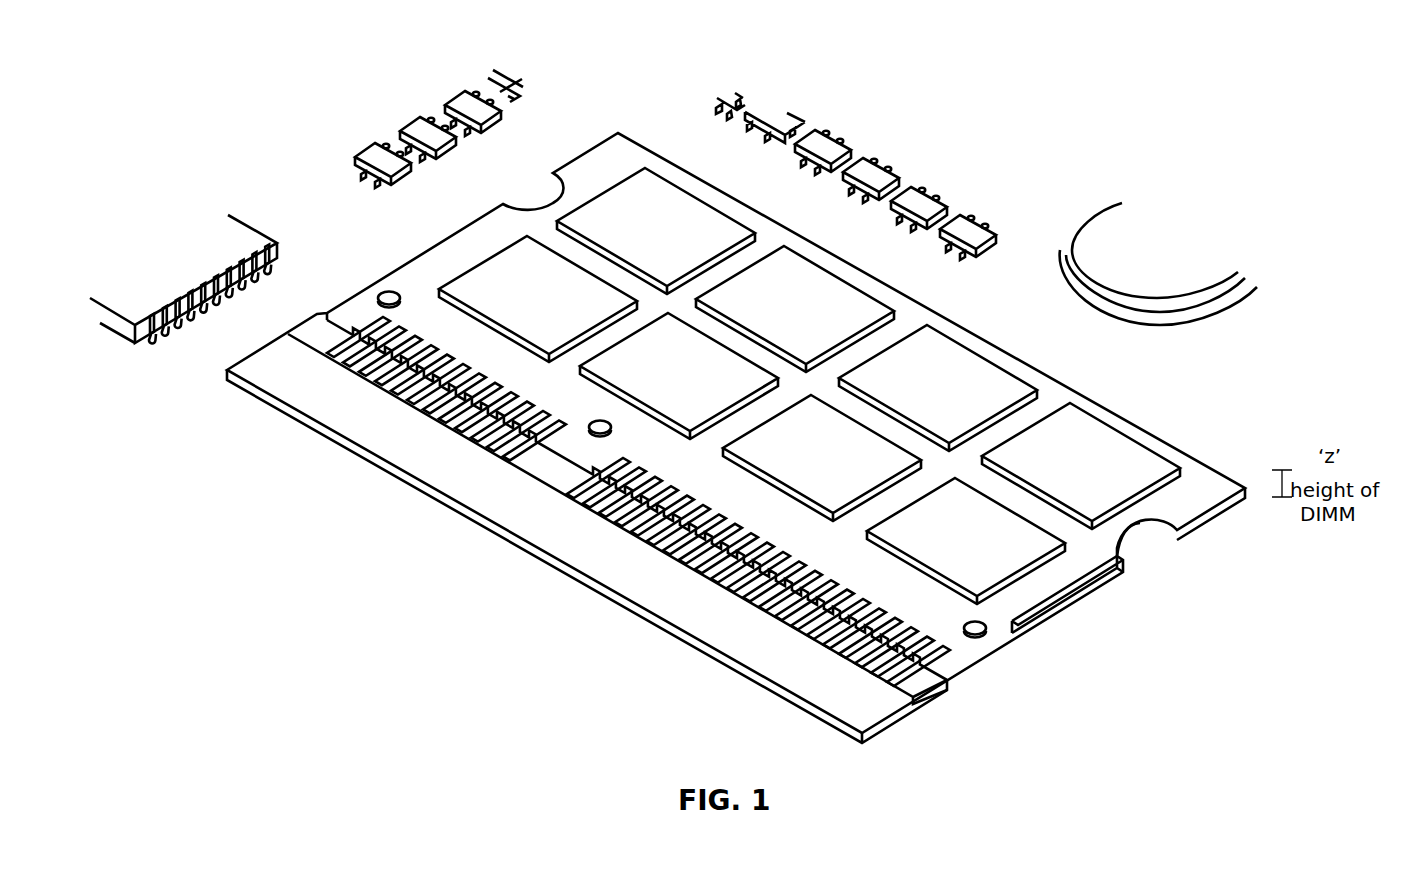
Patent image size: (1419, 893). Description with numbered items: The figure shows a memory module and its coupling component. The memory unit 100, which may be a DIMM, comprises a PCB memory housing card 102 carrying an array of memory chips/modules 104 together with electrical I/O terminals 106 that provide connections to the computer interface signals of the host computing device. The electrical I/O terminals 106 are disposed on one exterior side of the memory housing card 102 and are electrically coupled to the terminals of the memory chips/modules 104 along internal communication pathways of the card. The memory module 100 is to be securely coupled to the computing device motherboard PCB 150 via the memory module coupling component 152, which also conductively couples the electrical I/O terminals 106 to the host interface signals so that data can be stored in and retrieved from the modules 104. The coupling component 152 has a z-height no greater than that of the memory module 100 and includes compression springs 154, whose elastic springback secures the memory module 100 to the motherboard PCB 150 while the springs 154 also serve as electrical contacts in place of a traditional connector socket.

The memory unit 100 is at (1186, 695).
The PCB memory housing card 102 is at (1180, 457).
The array of memory chips/modules 104 is at (958, 530).
The memory unit electrical input/output (I/O) terminals 106 is at (598, 428).
The computing device motherboard PCB 150 is at (657, 107).
The memory module coupling component 152 is at (302, 387).
The compression springs 154 is at (612, 500).